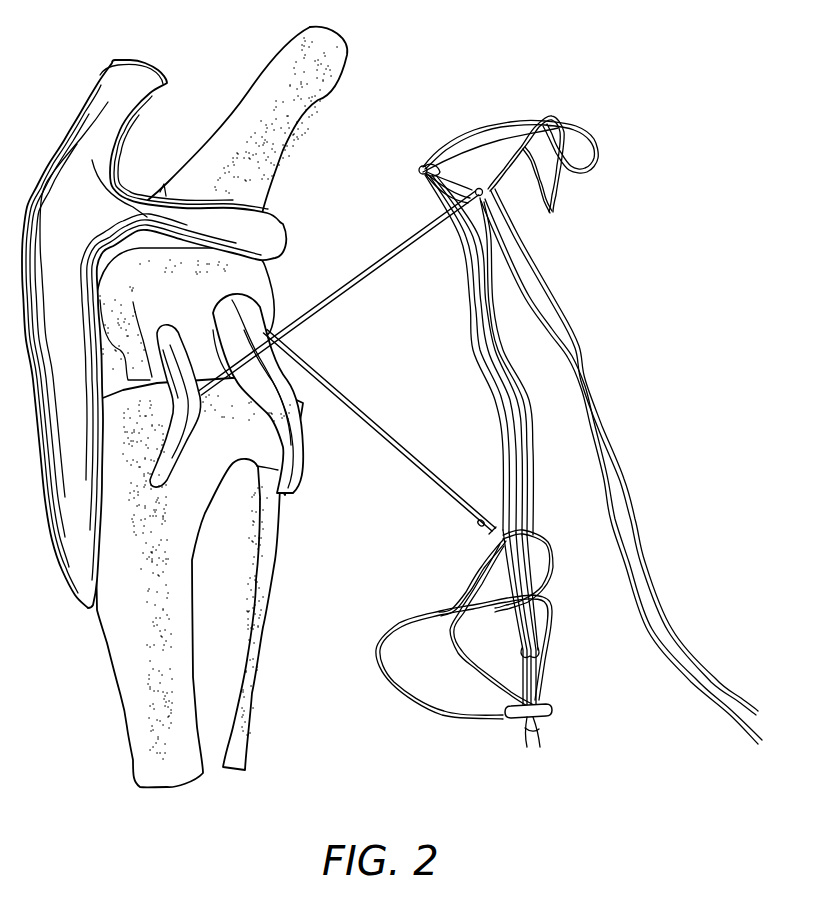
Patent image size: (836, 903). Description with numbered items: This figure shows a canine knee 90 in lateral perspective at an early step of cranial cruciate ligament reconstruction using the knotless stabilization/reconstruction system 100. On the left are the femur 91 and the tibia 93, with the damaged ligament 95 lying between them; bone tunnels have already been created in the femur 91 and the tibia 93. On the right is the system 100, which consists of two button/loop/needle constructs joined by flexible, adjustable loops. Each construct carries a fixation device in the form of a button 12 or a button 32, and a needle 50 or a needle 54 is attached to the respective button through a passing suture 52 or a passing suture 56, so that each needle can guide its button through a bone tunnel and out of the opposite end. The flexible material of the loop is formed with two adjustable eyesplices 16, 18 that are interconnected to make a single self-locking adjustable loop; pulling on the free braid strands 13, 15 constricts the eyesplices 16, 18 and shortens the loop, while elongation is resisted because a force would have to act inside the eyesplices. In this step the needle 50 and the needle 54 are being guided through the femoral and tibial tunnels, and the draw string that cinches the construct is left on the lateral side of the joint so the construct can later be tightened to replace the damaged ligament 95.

The button 12 is at (428, 162).
The free braid strand 13 is at (638, 606).
The free braid strand 15 is at (647, 563).
The adjustable eyesplice 16 is at (442, 200).
The adjustable eyesplice 18 is at (453, 174).
The button 32 is at (553, 712).
The needle 50 is at (357, 277).
The passing suture 52 is at (514, 122).
The needle 54 is at (403, 450).
The passing suture 56 is at (413, 697).
The canine knee 90 is at (195, 106).
The femur 91 is at (272, 140).
The tibia 93 is at (170, 513).
The damaged ligament 95 is at (297, 413).
The knotless stabilization/reconstruction system 100 is at (569, 409).